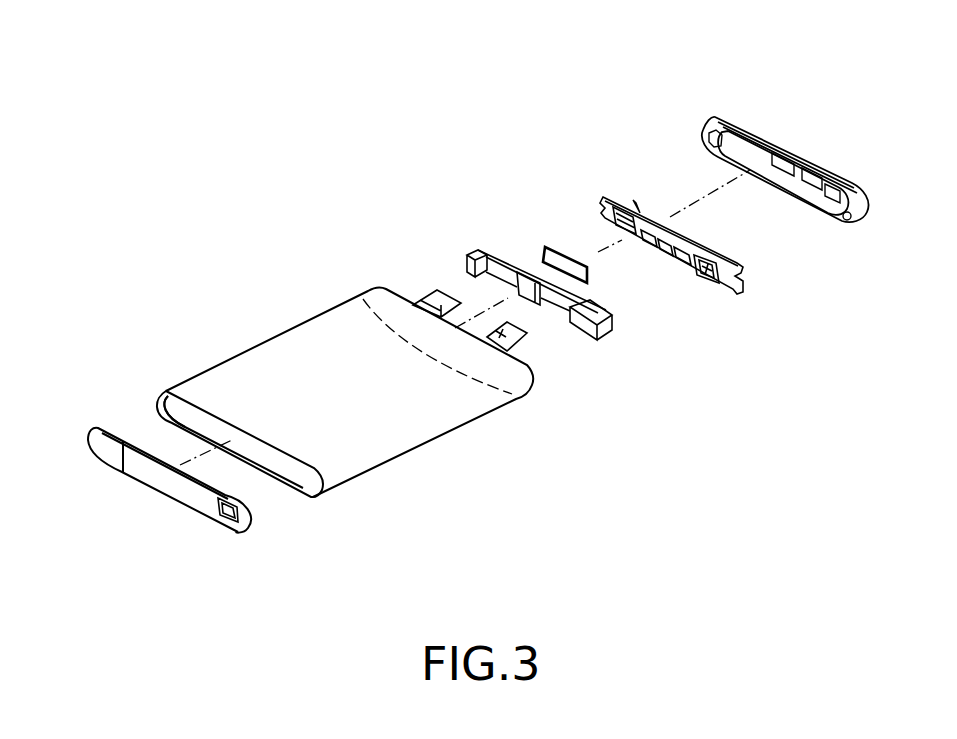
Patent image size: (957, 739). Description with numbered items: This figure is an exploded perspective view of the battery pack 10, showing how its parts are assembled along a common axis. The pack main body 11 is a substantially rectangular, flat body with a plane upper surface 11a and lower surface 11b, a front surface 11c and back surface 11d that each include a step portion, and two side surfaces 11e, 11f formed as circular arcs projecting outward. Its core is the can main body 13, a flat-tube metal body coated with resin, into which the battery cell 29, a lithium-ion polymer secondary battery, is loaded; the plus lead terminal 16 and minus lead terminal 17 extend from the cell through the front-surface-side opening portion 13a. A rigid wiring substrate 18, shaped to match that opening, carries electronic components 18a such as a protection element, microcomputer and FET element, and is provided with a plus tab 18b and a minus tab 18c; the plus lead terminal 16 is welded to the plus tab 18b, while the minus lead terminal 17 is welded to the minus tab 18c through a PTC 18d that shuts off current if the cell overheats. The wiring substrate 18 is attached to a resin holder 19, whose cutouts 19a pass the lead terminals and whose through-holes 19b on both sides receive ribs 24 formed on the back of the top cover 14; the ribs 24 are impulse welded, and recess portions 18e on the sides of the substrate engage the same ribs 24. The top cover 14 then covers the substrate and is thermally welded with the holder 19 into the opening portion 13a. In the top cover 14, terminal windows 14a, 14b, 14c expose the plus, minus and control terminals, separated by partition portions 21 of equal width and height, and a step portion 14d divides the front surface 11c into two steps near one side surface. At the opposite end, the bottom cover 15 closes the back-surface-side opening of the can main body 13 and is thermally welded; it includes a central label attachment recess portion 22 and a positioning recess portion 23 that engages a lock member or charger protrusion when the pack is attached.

The battery pack 10 is at (303, 210).
The pack main body 11 is at (300, 354).
The upper surface 11a is at (423, 377).
The lower surface 11b is at (272, 483).
The front surface 11c is at (872, 199).
The back surface 11d is at (162, 485).
The side surface 11e is at (218, 362).
The side surface 11f is at (410, 450).
The can main body 13 is at (352, 472).
The front-surface-side opening portion 13a is at (520, 380).
The top cover 14 is at (688, 123).
The terminal window 14a is at (846, 172).
The terminal window 14b is at (802, 150).
The terminal window 14c is at (820, 167).
The step portion 14d is at (770, 158).
The bottom cover 15 is at (112, 423).
The plus lead terminal 16 is at (513, 342).
The minus lead terminal 17 is at (432, 292).
The wiring substrate 18 is at (762, 267).
The electronic components 18a is at (640, 212).
The plus tab 18b is at (703, 283).
The minus tab 18c is at (632, 230).
The PTC 18d is at (545, 250).
The recess portions 18e is at (603, 207).
The holder 19 is at (626, 333).
The cutouts 19a is at (468, 283).
The through-holes 19b is at (470, 257).
The partition portions 21 is at (794, 196).
The label attachment recess portion 22 is at (195, 505).
The positioning recess portion 23 is at (235, 533).
The ribs 24 is at (707, 142).
The battery cell 29 is at (307, 483).